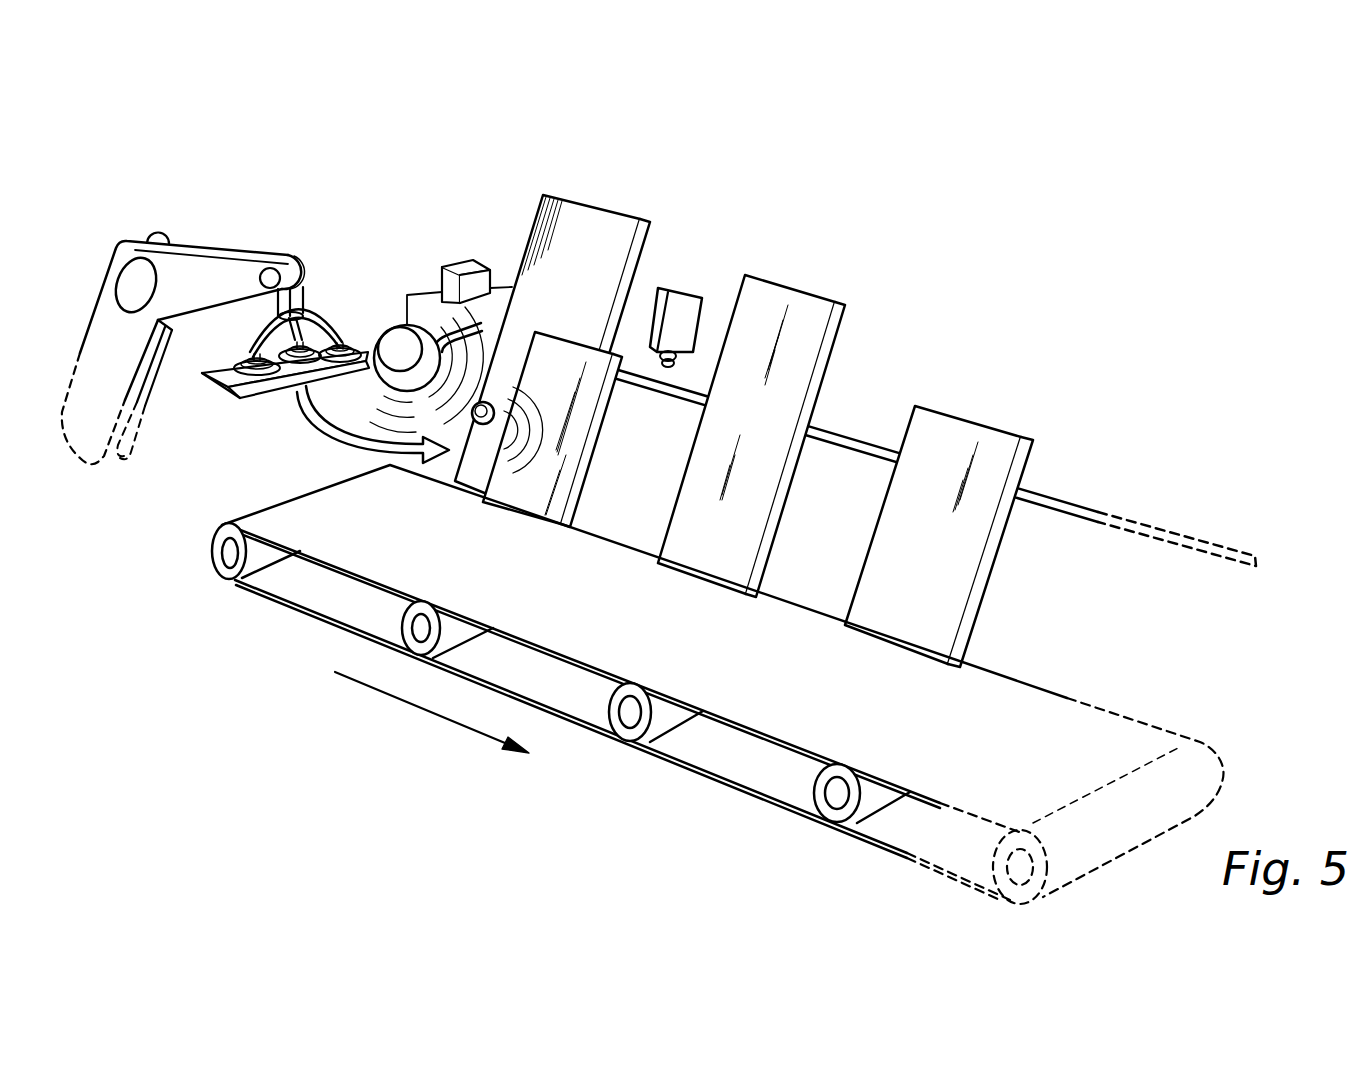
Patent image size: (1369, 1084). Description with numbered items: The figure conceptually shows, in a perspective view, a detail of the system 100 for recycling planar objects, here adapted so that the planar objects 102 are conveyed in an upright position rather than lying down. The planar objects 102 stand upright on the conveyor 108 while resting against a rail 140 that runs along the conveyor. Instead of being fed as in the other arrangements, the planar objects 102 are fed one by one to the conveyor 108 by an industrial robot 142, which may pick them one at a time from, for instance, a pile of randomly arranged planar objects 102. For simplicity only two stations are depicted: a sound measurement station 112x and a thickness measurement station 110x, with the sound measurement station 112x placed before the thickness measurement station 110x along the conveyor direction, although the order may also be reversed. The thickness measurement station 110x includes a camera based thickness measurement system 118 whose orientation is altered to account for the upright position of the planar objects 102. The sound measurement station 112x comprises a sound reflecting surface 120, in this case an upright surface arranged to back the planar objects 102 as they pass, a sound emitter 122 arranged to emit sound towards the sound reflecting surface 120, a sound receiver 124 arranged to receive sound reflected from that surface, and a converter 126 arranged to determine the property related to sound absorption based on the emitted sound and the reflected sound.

The system 100 is at (1040, 186).
The planar objects 102 is at (218, 390).
The conveyor 108 is at (258, 590).
The thickness measurement station 110x is at (745, 214).
The sound measurement station 112x is at (545, 176).
The camera based thickness measurement system 118 is at (691, 298).
The sound reflecting surface 120 is at (603, 209).
The sound emitter 122 is at (395, 345).
The sound receiver 124 is at (482, 426).
The converter 126 is at (452, 264).
The rail 140 is at (853, 432).
The industrial robot 142 is at (226, 252).